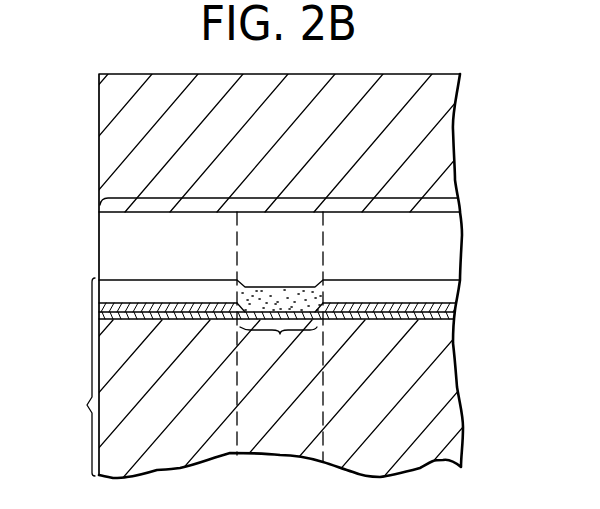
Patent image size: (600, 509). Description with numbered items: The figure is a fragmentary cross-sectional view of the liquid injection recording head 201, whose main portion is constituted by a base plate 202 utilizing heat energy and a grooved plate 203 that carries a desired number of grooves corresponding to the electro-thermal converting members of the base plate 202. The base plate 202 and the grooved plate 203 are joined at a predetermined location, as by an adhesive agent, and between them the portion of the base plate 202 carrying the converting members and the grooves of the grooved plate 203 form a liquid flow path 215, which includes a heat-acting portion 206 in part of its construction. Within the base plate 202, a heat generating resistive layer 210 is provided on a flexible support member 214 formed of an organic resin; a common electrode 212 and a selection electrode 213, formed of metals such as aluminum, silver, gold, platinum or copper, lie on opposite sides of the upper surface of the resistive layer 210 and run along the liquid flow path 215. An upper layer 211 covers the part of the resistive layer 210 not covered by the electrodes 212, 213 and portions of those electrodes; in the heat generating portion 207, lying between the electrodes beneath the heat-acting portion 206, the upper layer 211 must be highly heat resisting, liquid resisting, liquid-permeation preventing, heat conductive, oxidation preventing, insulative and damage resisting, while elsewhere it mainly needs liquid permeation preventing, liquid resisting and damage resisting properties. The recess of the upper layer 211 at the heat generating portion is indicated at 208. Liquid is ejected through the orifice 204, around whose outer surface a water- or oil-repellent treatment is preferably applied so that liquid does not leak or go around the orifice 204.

The liquid injection recording head 201 is at (465, 101).
The base plate 202 is at (62, 377).
The grooved plate 203 is at (440, 145).
The orifice 204 is at (122, 243).
The heat-acting portion 206 is at (313, 250).
The heat generating portion 207 is at (278, 345).
The recessed portion 208 is at (283, 287).
The heat generating resistive layer 210 is at (450, 317).
The upper layer 211 is at (443, 292).
The common electrode 212 is at (107, 307).
The selection electrode 213 is at (453, 308).
The flexible support member 214 is at (432, 395).
The liquid flow path 215 is at (272, 190).